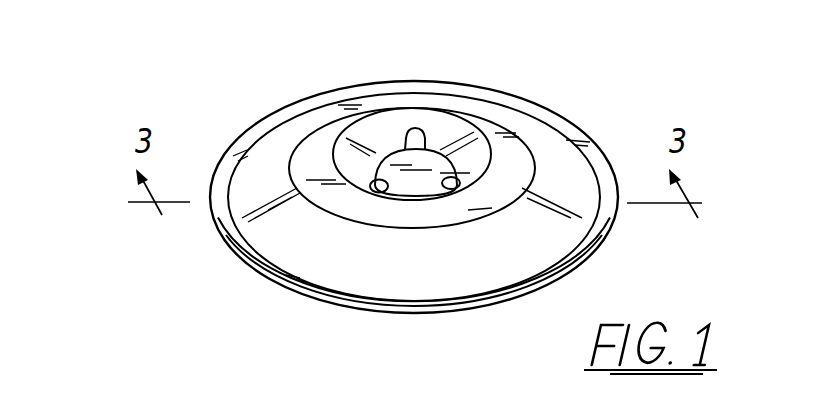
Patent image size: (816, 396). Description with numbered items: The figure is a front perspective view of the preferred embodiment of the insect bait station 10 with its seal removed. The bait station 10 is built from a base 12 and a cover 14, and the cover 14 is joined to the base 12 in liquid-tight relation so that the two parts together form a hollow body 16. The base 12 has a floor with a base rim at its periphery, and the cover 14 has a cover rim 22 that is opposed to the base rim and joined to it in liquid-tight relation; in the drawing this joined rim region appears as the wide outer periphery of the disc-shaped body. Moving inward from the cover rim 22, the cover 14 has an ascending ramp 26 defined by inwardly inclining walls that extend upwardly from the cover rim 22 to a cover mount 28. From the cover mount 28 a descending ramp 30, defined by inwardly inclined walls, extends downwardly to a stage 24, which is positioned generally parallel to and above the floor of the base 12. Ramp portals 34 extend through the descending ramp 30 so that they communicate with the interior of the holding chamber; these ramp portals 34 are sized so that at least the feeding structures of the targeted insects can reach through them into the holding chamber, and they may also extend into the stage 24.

The insect bait station 10 is at (587, 103).
The base 12 is at (300, 303).
The cover 14 is at (372, 278).
The hollow body 16 is at (275, 236).
The cover rim 22 is at (478, 299).
The stage 24 is at (390, 165).
The ascending ramp 26 is at (547, 228).
The cover mount 28 is at (437, 97).
The descending ramp 30 is at (382, 136).
The ramp portals 34 is at (383, 159).